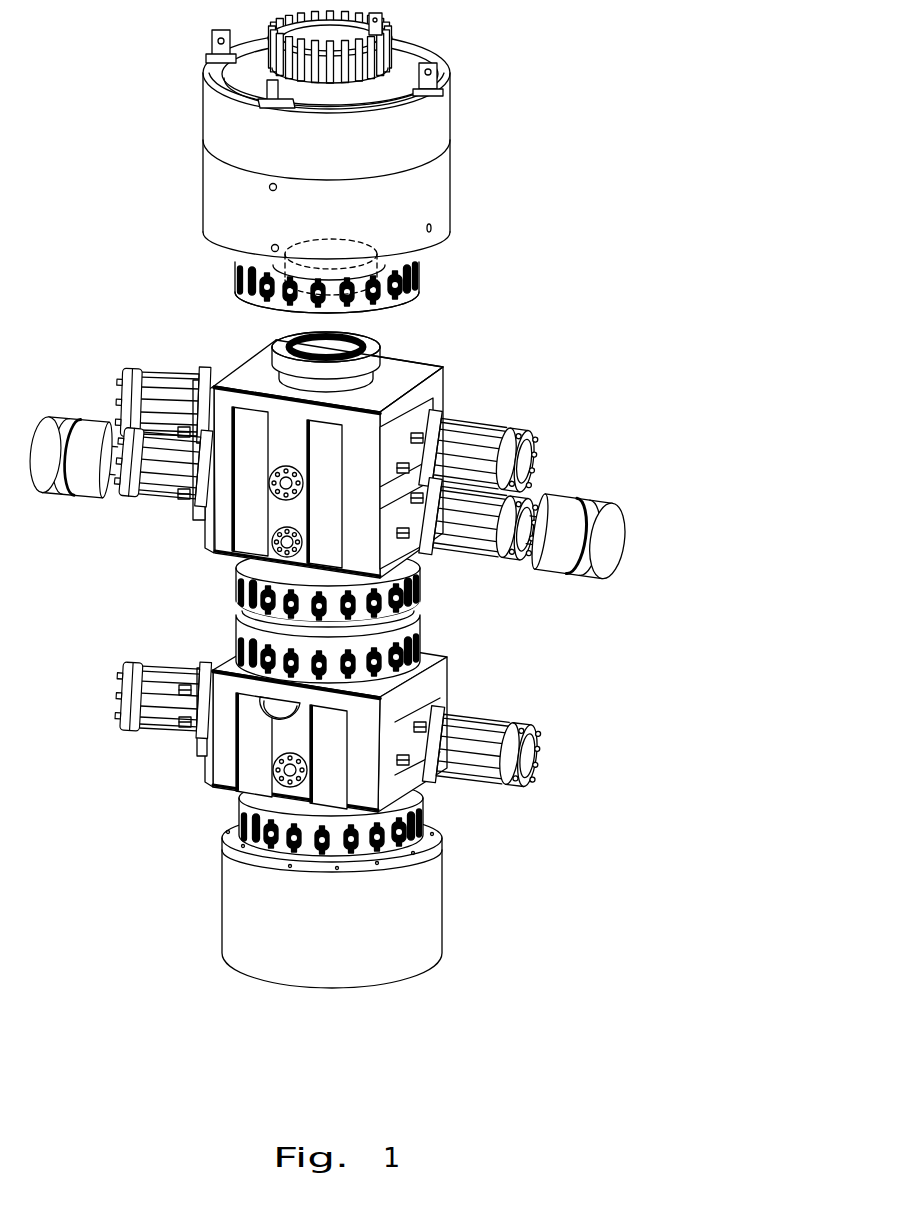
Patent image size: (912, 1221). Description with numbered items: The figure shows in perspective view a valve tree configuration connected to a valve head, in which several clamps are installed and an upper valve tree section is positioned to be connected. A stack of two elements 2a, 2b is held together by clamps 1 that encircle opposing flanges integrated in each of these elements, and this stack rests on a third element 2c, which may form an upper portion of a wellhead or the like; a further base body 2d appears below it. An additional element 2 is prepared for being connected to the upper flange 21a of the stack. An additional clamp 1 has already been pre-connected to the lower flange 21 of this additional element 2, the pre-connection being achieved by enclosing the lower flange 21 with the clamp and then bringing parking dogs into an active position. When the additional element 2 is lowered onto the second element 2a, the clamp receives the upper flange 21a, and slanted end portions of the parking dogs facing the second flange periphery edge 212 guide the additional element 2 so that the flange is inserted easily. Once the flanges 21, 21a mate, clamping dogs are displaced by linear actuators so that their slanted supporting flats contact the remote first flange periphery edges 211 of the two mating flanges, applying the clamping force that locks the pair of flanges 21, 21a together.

The clamp 1 is at (293, 553).
The additional element 2 is at (450, 120).
The lower flange 21 is at (252, 290).
The first flange periphery edge 211 is at (393, 247).
The second flange periphery edge 212 is at (380, 310).
The upper flange 21a is at (283, 345).
The second element 2a is at (447, 382).
The element 2b is at (347, 630).
The third element 2c is at (447, 660).
The base body 2d is at (428, 908).